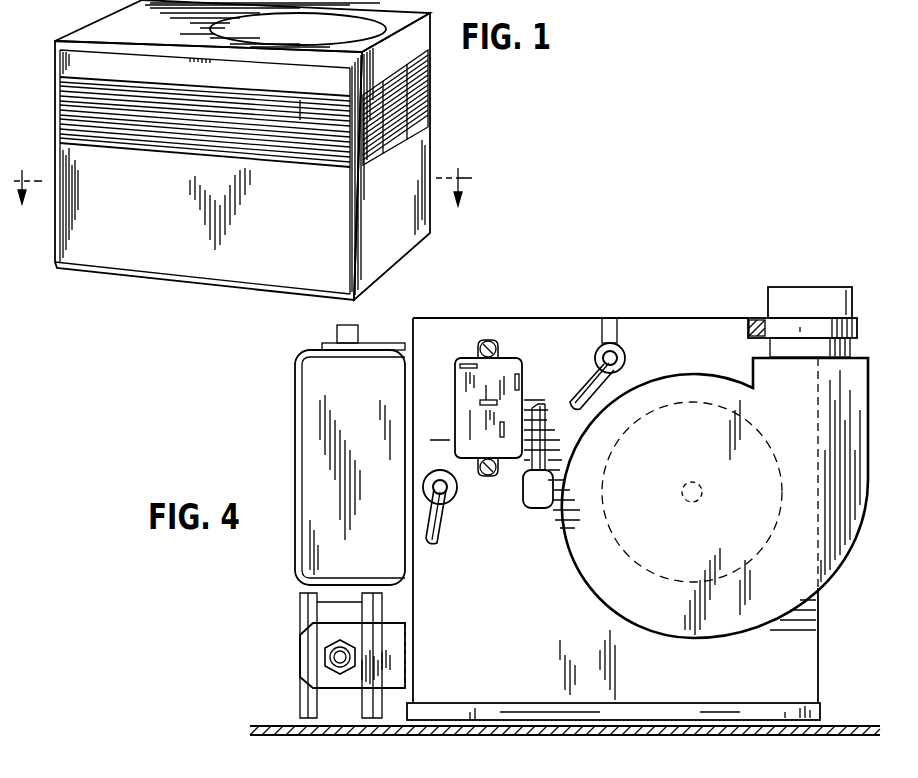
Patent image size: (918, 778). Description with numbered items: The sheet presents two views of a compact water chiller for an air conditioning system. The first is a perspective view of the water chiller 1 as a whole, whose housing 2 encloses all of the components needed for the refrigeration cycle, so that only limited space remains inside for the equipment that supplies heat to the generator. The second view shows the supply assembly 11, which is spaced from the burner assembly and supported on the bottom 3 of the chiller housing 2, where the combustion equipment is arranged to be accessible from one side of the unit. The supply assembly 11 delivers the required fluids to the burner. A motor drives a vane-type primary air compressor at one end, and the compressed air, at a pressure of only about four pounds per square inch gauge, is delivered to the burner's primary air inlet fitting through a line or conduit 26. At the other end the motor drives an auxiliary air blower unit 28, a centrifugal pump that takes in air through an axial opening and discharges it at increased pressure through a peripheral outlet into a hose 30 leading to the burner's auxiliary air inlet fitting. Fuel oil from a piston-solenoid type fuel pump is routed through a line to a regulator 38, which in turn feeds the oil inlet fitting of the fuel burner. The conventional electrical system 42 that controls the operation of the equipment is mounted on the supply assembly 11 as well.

In FIG. 1, the water chiller 1 is at (435, 126).
In FIG. 1, the housing 2 is at (284, 229).
In FIG. 4, the bottom 3 is at (832, 735).
In FIG. 4, the supply assembly 11 is at (694, 684).
In FIG. 4, the line or conduit 26 is at (593, 415).
In FIG. 4, the auxiliary air blower unit 28 is at (676, 371).
In FIG. 4, the hose 30 is at (795, 300).
In FIG. 4, the regulator 38 is at (300, 612).
In FIG. 4, the electrical system 42 is at (477, 318).